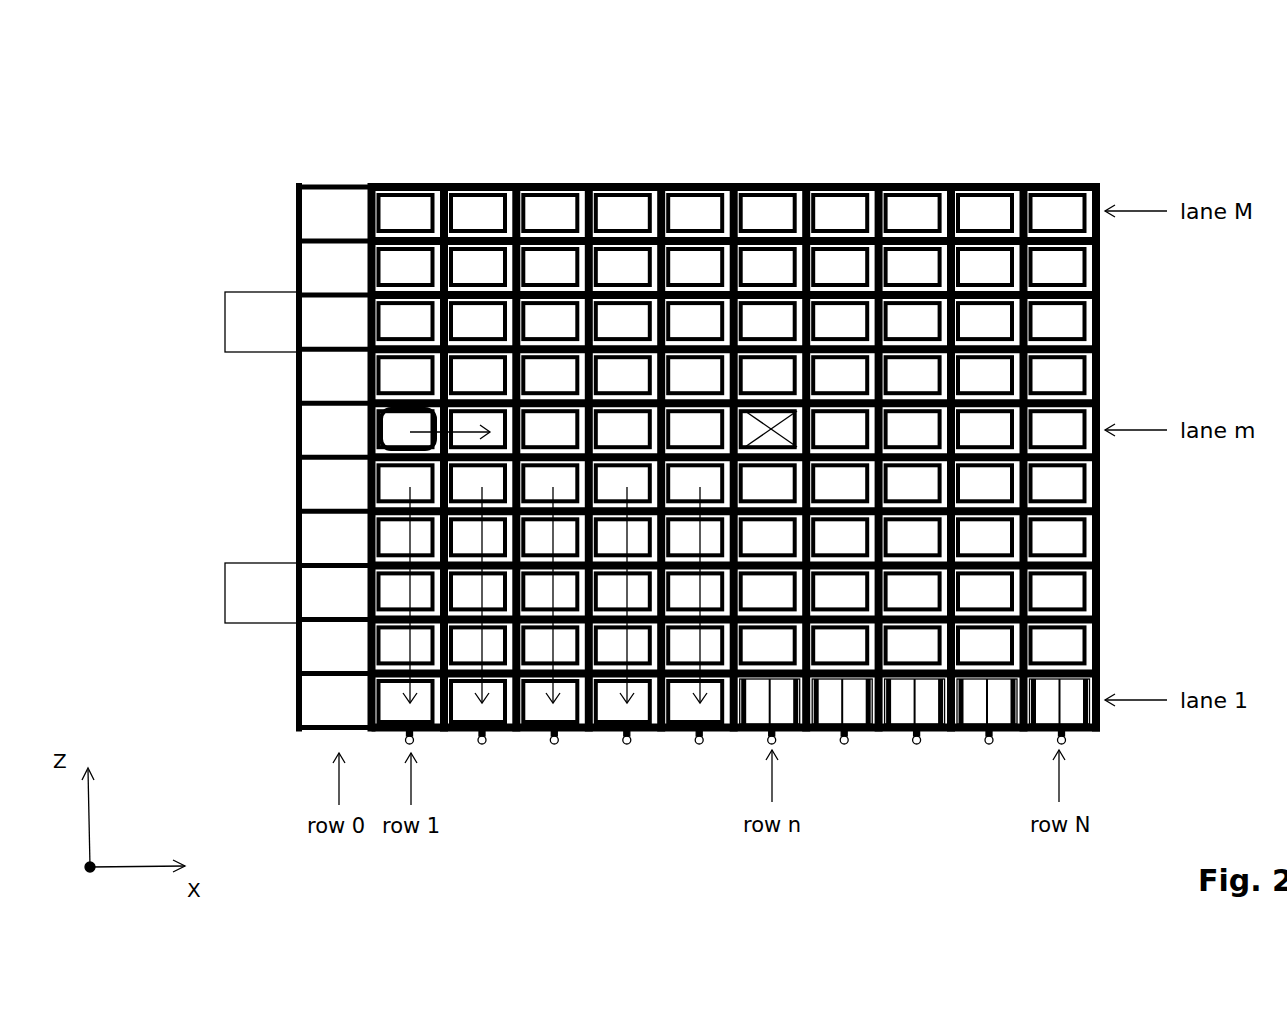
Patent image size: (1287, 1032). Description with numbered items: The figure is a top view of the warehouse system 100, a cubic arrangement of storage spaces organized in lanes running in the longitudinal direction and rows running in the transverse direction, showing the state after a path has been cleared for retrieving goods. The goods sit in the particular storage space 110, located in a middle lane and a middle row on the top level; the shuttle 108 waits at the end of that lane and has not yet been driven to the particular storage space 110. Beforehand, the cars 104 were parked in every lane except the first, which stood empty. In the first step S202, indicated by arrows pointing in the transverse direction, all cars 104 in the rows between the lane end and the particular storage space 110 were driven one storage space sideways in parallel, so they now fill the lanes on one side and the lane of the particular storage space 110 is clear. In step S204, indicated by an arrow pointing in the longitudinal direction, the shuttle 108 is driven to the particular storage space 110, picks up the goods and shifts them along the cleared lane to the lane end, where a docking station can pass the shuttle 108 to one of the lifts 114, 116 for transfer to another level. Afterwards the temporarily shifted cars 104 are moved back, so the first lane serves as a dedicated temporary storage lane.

The warehouse system 100 is at (262, 119).
The cars 104 is at (575, 732).
The shuttle 108 is at (400, 425).
The particular storage space 110 is at (770, 417).
The lift 114 is at (225, 322).
The lift 116 is at (225, 592).
The first step S202 is at (408, 543).
The step S204 is at (466, 432).